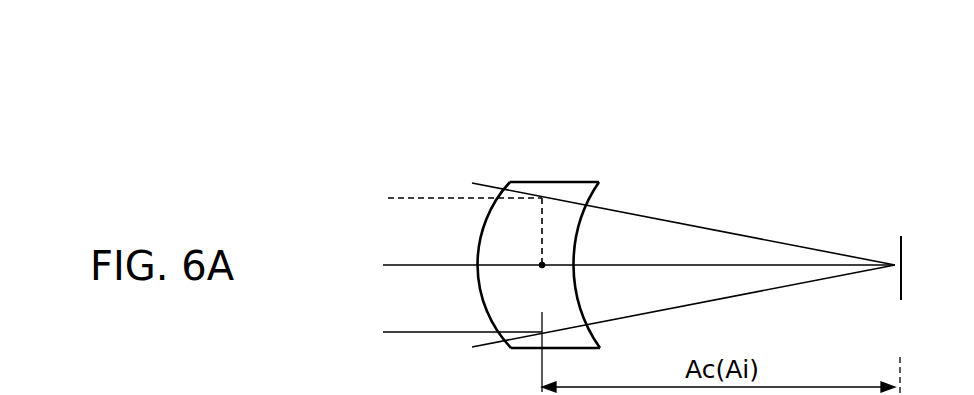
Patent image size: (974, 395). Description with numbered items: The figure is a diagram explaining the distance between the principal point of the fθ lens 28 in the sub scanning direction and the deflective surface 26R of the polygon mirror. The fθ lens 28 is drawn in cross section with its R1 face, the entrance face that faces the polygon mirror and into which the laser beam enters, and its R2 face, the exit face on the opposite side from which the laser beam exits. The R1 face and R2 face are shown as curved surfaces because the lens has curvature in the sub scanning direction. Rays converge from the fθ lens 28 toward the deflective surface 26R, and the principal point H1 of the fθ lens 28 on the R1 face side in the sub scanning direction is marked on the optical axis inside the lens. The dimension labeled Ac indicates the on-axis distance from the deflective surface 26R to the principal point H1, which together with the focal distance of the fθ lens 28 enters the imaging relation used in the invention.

The fθ lens 28 is at (544, 198).
The R1 face R1 is at (594, 193).
The R2 face R2 is at (483, 222).
The deflective surface 26R is at (899, 248).
The principal point H1 is at (542, 285).